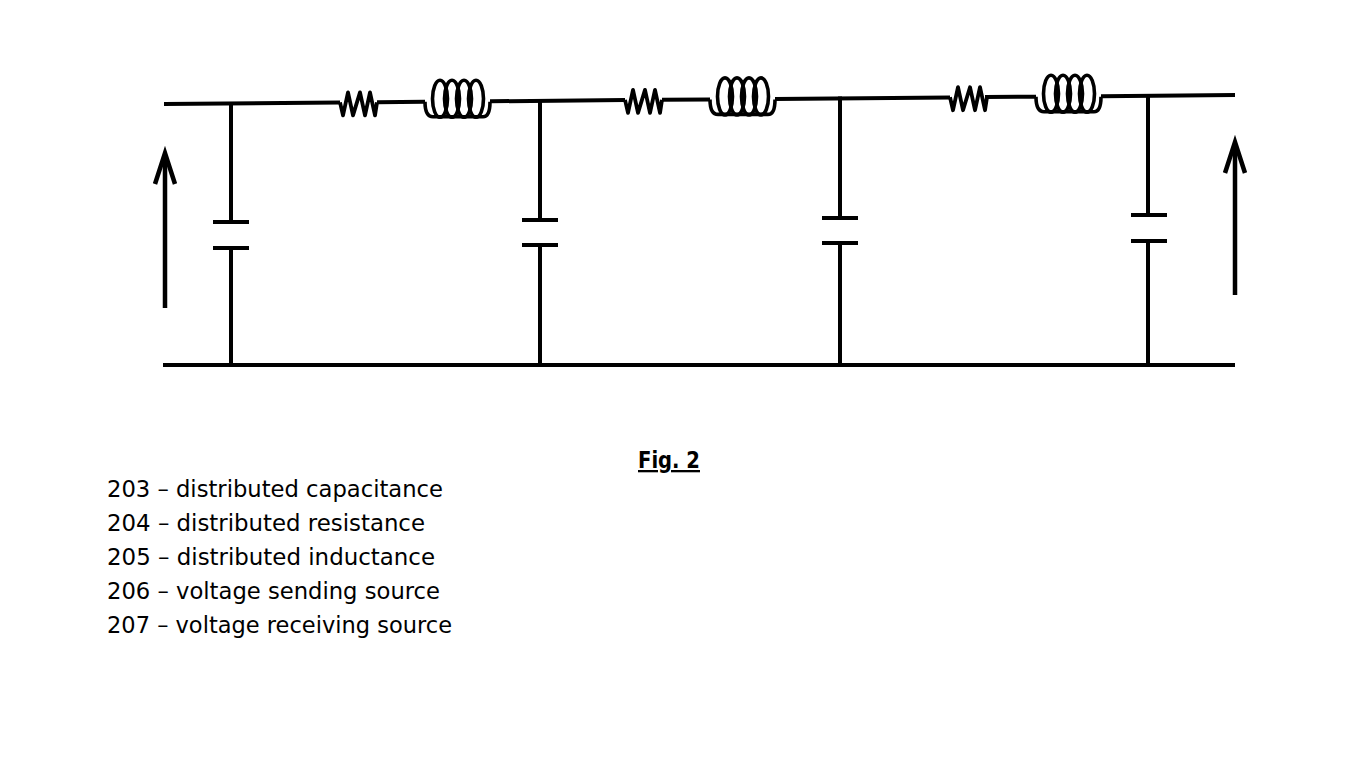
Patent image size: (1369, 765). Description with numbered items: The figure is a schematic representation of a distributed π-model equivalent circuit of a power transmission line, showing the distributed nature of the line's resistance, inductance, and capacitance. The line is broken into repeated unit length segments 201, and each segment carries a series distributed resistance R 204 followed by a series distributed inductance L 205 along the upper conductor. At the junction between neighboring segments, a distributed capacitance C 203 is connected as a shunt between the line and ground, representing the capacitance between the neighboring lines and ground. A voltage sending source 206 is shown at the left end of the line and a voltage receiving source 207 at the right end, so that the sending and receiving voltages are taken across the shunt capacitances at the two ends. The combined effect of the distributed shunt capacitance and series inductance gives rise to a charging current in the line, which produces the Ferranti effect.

The unit length segment 201 is at (539, 318).
The distributed capacitance 203 is at (704, 230).
The distributed resistance 204 is at (668, 63).
The distributed inductance 205 is at (763, 64).
The voltage sending source 206 is at (121, 230).
The voltage receiving source 207 is at (1285, 218).